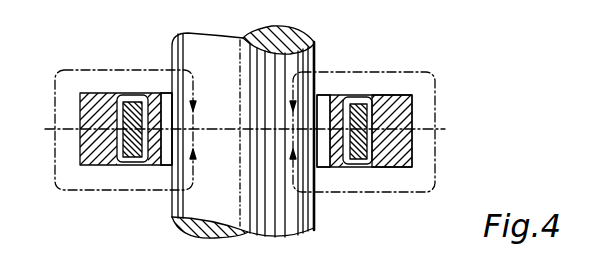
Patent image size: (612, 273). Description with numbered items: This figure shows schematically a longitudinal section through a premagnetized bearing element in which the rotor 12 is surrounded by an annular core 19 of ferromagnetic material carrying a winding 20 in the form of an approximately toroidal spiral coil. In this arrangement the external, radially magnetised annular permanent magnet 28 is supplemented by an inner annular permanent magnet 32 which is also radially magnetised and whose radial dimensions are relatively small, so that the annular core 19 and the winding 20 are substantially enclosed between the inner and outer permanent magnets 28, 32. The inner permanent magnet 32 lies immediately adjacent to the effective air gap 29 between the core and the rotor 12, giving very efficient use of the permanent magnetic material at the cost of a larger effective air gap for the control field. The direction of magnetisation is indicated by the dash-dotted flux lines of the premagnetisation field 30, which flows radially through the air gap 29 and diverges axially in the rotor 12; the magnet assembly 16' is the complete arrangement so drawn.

The rotor 12 is at (222, 200).
The magnetic assembly 16' is at (375, 114).
The annular core 19 is at (122, 167).
The winding 20 is at (138, 168).
The permanent magnet 28 is at (397, 158).
The air gap 29 is at (170, 97).
The magnetic field 30 is at (437, 100).
The inner permanent magnet 32 is at (336, 153).